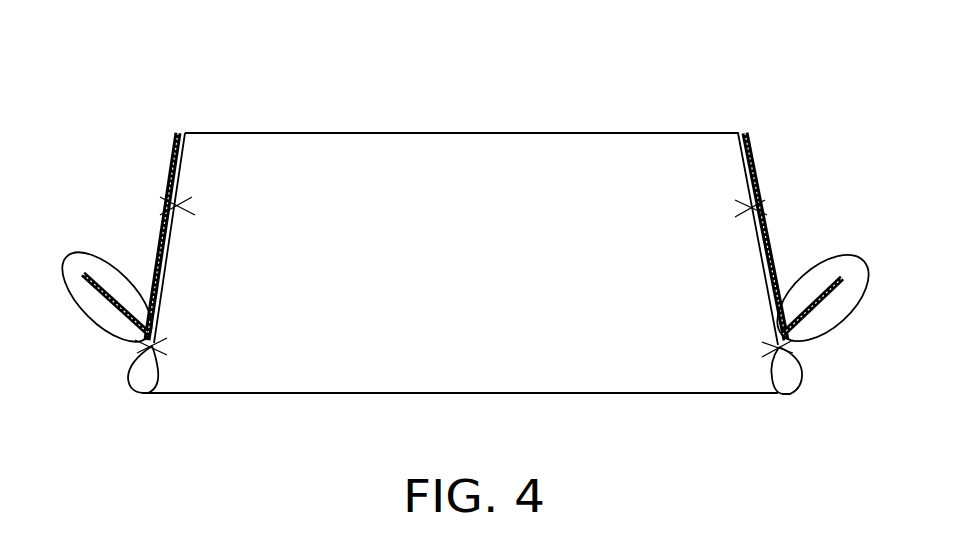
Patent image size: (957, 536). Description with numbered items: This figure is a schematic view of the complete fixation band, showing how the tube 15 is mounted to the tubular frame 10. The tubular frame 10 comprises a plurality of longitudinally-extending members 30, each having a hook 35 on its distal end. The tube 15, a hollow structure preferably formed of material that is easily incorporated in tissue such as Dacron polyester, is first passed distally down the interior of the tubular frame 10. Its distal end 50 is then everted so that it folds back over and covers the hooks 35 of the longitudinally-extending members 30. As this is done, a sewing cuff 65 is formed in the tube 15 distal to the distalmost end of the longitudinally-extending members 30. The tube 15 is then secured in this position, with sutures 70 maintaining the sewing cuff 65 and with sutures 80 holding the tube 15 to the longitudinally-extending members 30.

The tubular frame 10 is at (144, 223).
The tube 15 is at (408, 112).
The longitudinally-extending members 30 is at (158, 149).
The hook 35 is at (850, 312).
The distal end 50 is at (793, 278).
The sewing cuff 65 is at (108, 383).
The sutures 70 is at (190, 341).
The sutures 80 is at (212, 198).